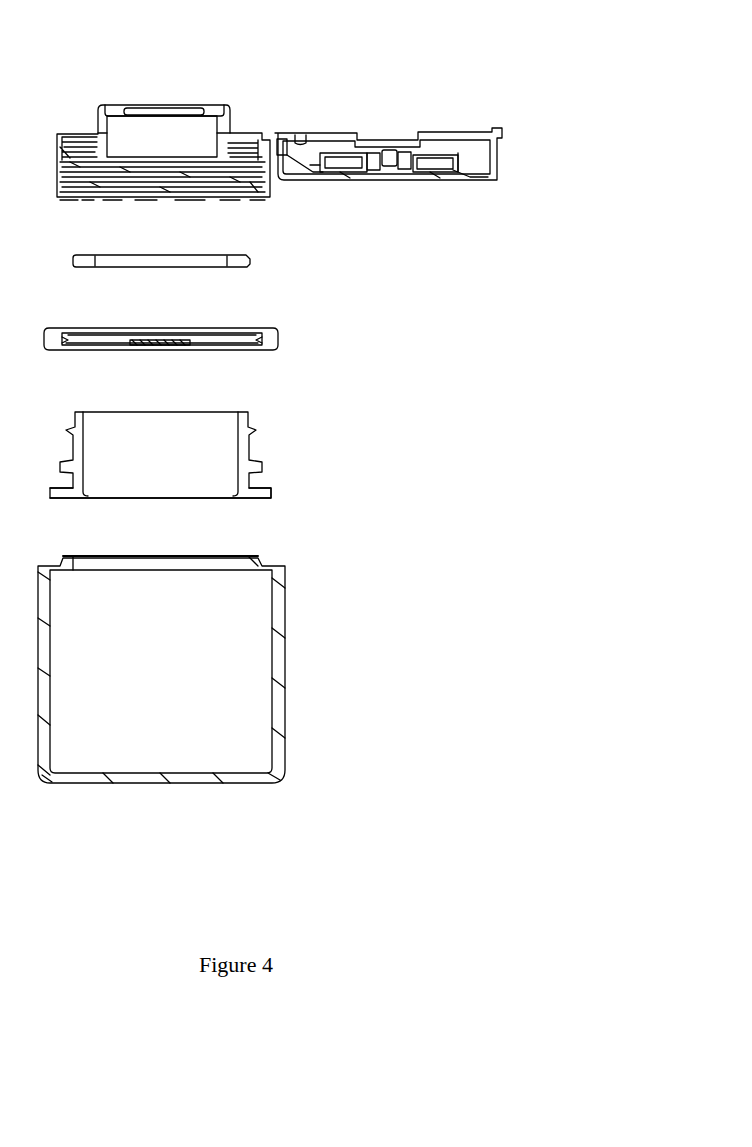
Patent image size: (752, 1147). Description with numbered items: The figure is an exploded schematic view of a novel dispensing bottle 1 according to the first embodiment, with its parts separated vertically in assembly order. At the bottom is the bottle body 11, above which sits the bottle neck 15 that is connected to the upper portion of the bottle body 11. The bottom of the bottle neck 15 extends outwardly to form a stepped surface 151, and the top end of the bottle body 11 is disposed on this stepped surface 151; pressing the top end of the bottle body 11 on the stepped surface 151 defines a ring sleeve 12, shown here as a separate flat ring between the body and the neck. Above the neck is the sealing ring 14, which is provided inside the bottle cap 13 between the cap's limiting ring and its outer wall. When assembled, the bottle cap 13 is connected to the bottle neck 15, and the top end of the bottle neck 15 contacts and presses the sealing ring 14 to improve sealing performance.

The dispensing bottle 1 is at (227, 38).
The bottle body 11 is at (217, 713).
The ring sleeve 12 is at (277, 335).
The bottle cap 13 is at (243, 132).
The sealing ring 14 is at (247, 262).
The bottle neck 15 is at (247, 462).
The stepped surface 151 is at (262, 493).